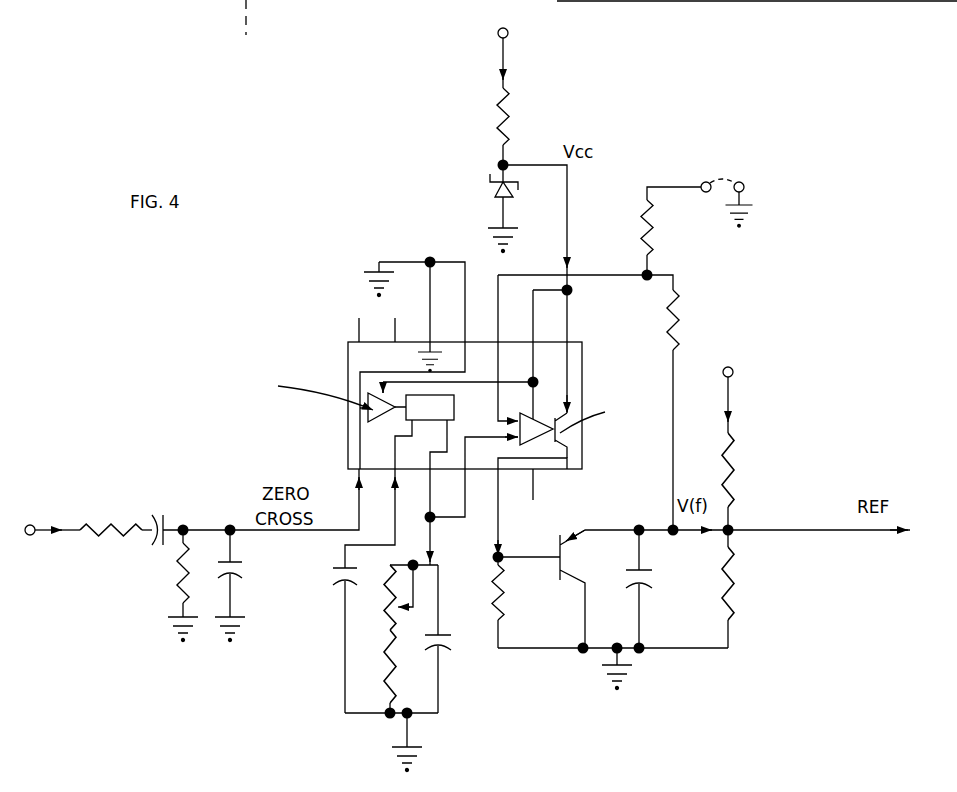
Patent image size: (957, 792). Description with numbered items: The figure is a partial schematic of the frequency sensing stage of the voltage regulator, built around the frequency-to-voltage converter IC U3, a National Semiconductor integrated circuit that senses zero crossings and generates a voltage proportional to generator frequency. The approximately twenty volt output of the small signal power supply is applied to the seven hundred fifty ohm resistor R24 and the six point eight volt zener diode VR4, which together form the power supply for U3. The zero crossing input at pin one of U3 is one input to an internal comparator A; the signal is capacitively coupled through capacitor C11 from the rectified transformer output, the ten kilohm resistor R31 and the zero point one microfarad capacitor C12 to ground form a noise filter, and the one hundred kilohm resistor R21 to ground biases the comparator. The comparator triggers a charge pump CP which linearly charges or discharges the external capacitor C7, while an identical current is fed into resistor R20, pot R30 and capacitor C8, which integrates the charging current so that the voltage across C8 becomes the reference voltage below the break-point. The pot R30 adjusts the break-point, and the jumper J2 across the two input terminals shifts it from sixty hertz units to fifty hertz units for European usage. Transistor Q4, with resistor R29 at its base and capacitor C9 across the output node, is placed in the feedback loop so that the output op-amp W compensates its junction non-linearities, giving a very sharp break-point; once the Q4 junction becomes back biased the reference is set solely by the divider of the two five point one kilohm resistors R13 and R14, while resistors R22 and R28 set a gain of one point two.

The resistor R24 is at (505, 84).
The zener diode VR4 is at (468, 209).
The jumper J2 is at (728, 155).
The resistor R22 is at (672, 231).
The resistor R28 is at (694, 409).
The frequency-to-voltage converter IC U3 is at (346, 357).
The resistor R31 is at (88, 529).
The coupling capacitor C11 is at (161, 516).
The resistor R21 is at (155, 586).
The capacitor C12 is at (251, 586).
The capacitor C7 is at (346, 591).
The pot R30 is at (380, 597).
The resistor R20 is at (372, 671).
The capacitor C8 is at (453, 639).
The resistor R29 is at (517, 602).
The transistor Q4 is at (545, 589).
The capacitor C9 is at (661, 589).
The resistor R14 is at (768, 447).
The resistor R13 is at (750, 589).